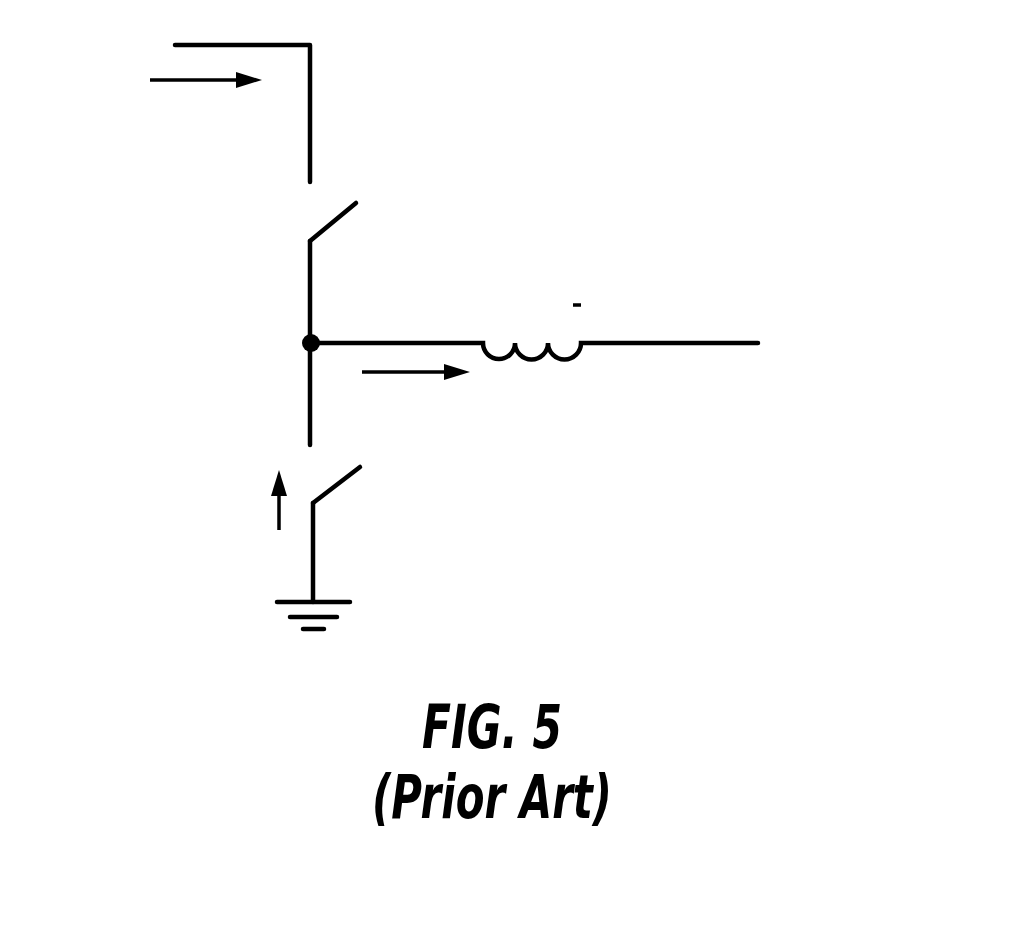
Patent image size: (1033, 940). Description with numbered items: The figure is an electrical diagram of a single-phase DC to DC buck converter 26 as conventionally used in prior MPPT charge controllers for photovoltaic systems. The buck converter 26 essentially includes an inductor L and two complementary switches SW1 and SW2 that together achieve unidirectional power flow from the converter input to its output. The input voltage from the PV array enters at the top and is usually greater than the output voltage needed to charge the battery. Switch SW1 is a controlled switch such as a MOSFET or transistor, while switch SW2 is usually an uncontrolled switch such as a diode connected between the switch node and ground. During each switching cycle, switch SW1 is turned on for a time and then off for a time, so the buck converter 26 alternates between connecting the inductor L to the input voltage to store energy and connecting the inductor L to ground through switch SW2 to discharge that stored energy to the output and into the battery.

The single-phase DC to DC buck converter 26 is at (485, 314).
The inductor L is at (562, 392).
The controlled switch SW1 is at (380, 218).
The uncontrolled switch SW2 is at (384, 482).